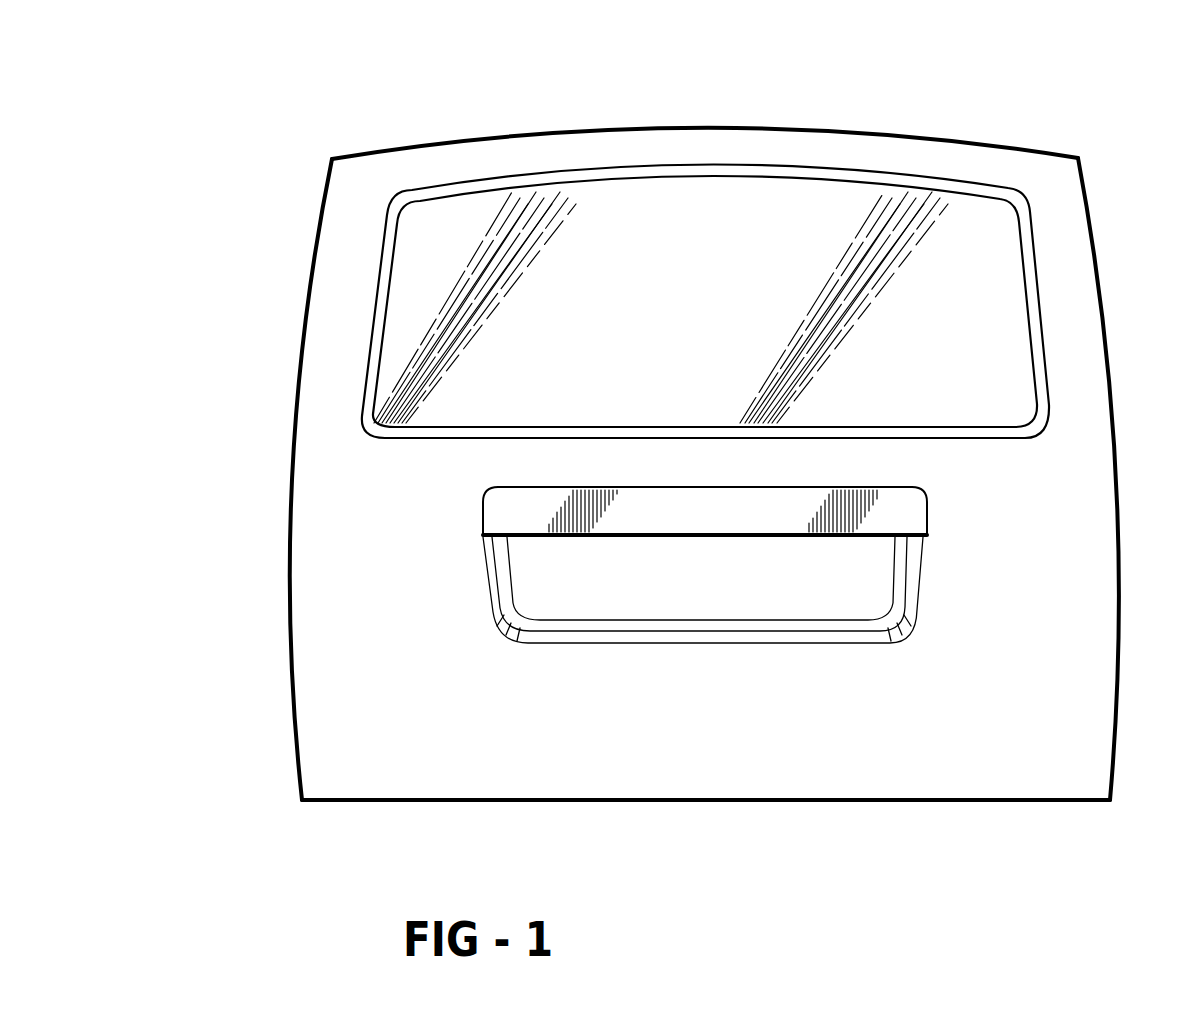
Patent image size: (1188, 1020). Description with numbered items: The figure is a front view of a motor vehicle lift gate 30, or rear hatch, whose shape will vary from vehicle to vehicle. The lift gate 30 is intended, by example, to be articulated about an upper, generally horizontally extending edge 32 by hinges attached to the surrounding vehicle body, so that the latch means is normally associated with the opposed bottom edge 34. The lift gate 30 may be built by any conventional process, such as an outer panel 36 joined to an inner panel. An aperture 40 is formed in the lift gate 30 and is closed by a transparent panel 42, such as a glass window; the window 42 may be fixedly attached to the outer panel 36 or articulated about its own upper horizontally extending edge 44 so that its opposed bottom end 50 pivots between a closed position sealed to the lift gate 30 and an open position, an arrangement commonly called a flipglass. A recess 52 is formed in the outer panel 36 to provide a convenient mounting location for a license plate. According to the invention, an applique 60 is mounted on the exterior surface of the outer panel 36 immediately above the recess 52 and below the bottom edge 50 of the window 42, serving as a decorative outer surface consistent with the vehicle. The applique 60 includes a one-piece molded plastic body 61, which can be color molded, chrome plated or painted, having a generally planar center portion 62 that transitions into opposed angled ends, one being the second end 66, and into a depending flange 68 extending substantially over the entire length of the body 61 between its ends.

The lift gate 30 is at (681, 481).
The upper edge 32 is at (683, 128).
The bottom edge 34 is at (690, 802).
The outer panel 36 is at (1037, 783).
The aperture 40 is at (1032, 333).
The transparent panel 42 is at (1007, 285).
The upper edge of window 44 is at (813, 188).
The bottom end of window 50 is at (957, 421).
The recess 52 is at (903, 598).
The applique 60 is at (739, 542).
The body 61 is at (550, 479).
The center portion 62 is at (681, 497).
The second end 66 is at (922, 507).
The depending flange 68 is at (877, 523).